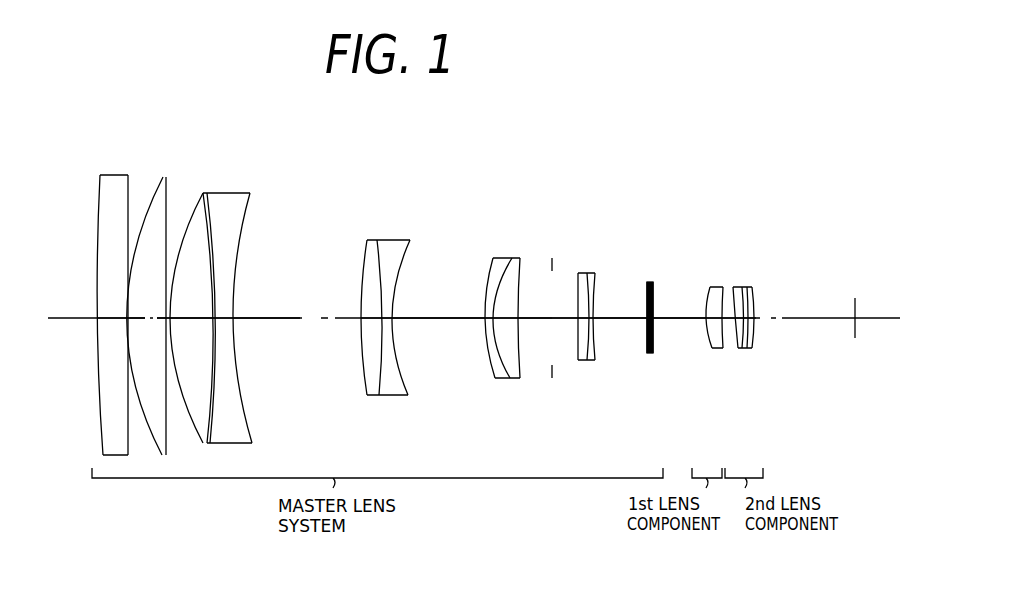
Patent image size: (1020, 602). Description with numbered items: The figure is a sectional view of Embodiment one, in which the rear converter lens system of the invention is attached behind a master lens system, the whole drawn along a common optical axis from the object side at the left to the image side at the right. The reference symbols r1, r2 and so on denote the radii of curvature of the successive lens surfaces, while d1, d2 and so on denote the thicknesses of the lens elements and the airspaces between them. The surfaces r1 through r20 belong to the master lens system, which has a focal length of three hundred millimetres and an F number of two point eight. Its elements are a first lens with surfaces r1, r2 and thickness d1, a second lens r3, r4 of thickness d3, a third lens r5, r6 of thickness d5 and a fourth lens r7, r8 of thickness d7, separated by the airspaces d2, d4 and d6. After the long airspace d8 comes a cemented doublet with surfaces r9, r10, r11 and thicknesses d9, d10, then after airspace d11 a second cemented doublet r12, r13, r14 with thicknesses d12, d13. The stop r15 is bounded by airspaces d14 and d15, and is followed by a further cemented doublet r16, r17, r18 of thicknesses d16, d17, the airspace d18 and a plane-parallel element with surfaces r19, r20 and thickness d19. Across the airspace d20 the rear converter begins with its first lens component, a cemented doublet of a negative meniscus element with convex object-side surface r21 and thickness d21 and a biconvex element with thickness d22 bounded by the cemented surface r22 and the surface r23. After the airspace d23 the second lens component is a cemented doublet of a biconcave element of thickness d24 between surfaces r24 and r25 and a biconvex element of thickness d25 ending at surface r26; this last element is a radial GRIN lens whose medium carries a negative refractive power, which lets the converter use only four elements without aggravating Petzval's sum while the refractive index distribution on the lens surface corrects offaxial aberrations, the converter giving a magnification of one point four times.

The radius of curvature r1 is at (98, 192).
The radius of curvature r2 is at (126, 194).
The radius of curvature r3 is at (147, 194).
The radius of curvature r4 is at (166, 177).
The radius of curvature r5 is at (192, 198).
The radius of curvature r6 is at (205, 193).
The radius of curvature r7 is at (220, 193).
The radius of curvature r8 is at (244, 193).
The radius of curvature r9 is at (365, 252).
The radius of curvature r10 is at (377, 240).
The radius of curvature r11 is at (404, 242).
The radius of curvature r12 is at (485, 258).
The radius of curvature r13 is at (503, 258).
The radius of curvature r14 is at (521, 258).
The stop r15 is at (551, 263).
The radius of curvature r16 is at (574, 280).
The radius of curvature r17 is at (589, 273).
The radius of curvature r18 is at (600, 290).
The radius of curvature r19 is at (647, 283).
The radius of curvature r20 is at (655, 283).
The radius of curvature r21 is at (708, 290).
The radius of curvature r22 is at (720, 287).
The radius of curvature r23 is at (733, 286).
The radius of curvature r24 is at (743, 285).
The radius of curvature r25 is at (748, 286).
The radius of curvature r26 is at (756, 298).
The thickness d1 is at (107, 320).
The airspace d2 is at (124, 322).
The thickness d3 is at (142, 320).
The airspace d4 is at (150, 314).
The thickness d5 is at (188, 322).
The airspace d6 is at (236, 314).
The thickness d7 is at (236, 322).
The airspace d8 is at (299, 320).
The thickness d9 is at (364, 320).
The thickness d10 is at (391, 322).
The airspace d11 is at (446, 320).
The thickness d12 is at (489, 320).
The thickness d13 is at (512, 325).
The airspace d14 is at (531, 320).
The airspace d15 is at (565, 320).
The thickness d16 is at (568, 322).
The thickness d17 is at (590, 362).
The airspace d18 is at (610, 320).
The thickness d19 is at (652, 355).
The airspace d20 is at (677, 320).
The thickness d21 is at (706, 322).
The thickness d22 is at (724, 350).
The airspace d23 is at (730, 322).
The thickness d24 is at (753, 313).
The thickness d25 is at (758, 322).